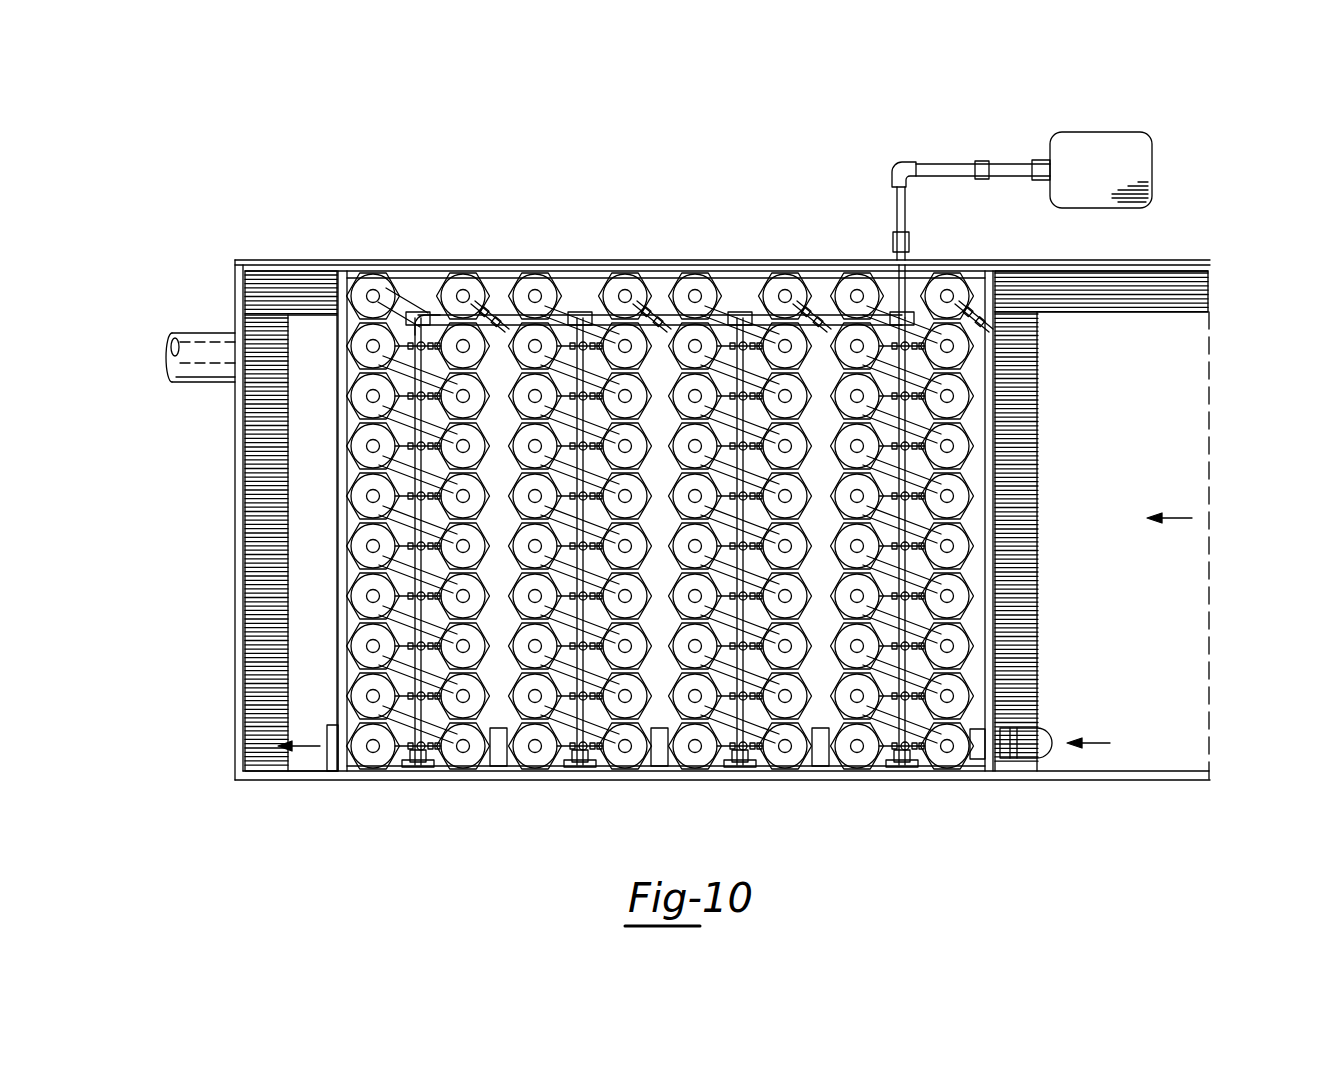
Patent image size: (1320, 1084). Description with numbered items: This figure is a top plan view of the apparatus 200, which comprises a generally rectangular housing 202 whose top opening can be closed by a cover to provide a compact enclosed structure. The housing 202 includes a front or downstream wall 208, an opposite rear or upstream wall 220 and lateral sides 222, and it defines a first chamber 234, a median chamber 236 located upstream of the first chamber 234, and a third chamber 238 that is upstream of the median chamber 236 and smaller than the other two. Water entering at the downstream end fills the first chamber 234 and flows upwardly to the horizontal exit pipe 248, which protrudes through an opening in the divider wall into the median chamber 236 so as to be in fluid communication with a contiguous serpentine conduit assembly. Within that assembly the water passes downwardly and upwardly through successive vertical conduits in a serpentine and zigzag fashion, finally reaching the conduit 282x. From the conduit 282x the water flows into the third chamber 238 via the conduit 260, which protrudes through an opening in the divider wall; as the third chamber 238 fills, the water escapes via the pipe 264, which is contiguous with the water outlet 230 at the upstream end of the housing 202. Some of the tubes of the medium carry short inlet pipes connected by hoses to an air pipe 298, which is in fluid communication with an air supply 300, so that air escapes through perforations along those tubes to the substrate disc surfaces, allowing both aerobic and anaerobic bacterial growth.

The apparatus 200 is at (732, 170).
The housing 202 is at (238, 262).
The downstream wall 208 is at (1212, 397).
The upstream wall 220 is at (235, 568).
The lateral sides 222 is at (565, 260).
The water outlet 230 is at (172, 350).
The first chamber 234 is at (1172, 735).
The median chamber 236 is at (500, 753).
The third chamber 238 is at (300, 652).
The horizontal exit pipe 248 is at (1030, 740).
The conduit 260 is at (335, 755).
The pipe 264 is at (205, 370).
The conduit 282x is at (377, 760).
The air pipe 298 is at (895, 242).
The air supply 300 is at (1088, 145).